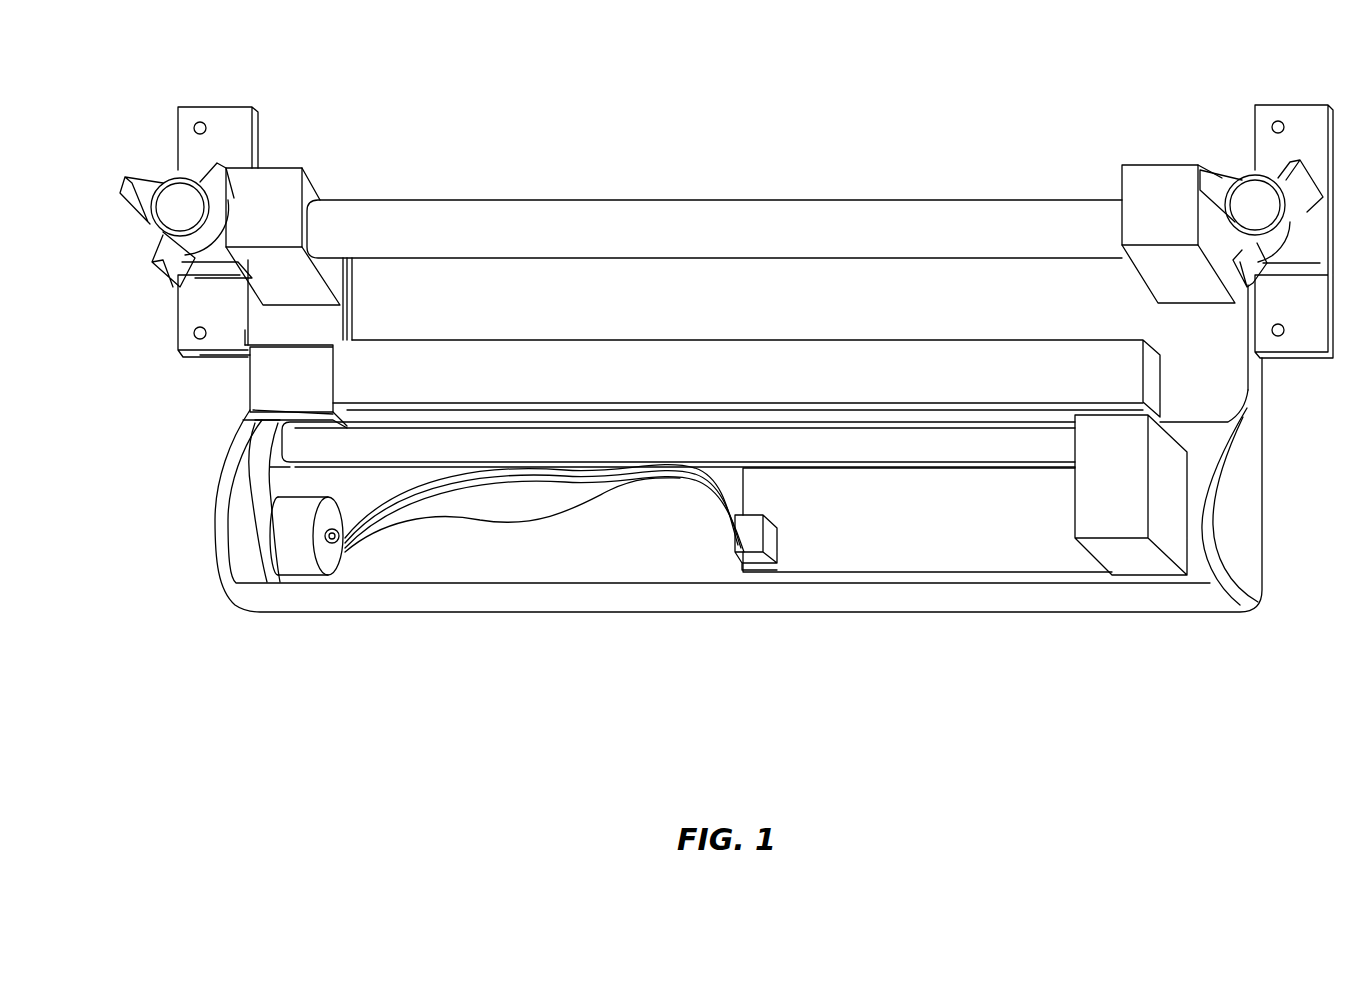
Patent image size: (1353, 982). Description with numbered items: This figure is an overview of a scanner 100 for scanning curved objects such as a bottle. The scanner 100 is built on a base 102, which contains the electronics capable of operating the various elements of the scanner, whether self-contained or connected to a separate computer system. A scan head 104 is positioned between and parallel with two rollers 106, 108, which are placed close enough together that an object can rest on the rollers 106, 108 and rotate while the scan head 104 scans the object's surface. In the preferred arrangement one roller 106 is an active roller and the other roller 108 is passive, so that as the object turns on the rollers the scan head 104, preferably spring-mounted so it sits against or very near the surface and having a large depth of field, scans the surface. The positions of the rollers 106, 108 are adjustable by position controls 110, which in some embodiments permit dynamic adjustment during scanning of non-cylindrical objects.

The scanner 100 is at (705, 91).
The base 102 is at (228, 600).
The scan head 104 is at (532, 357).
The roller 106 is at (730, 440).
The roller 108 is at (532, 217).
The position controls 110 is at (172, 178).